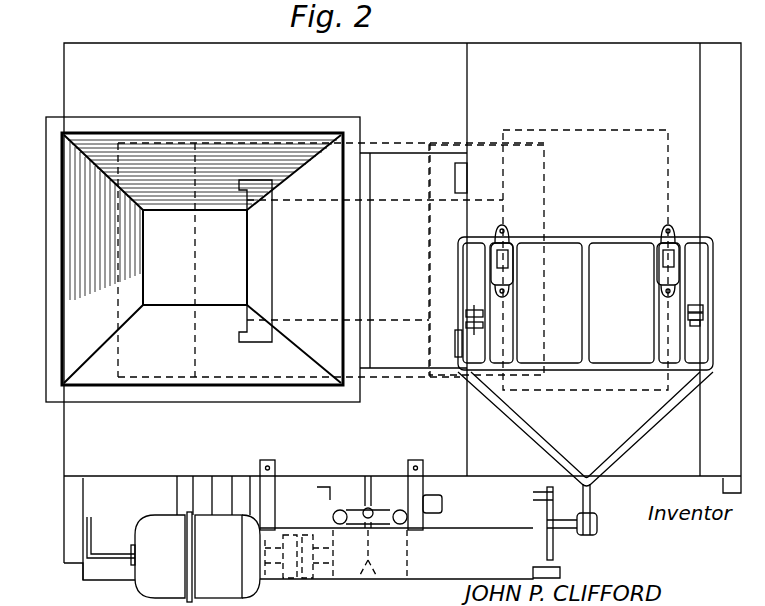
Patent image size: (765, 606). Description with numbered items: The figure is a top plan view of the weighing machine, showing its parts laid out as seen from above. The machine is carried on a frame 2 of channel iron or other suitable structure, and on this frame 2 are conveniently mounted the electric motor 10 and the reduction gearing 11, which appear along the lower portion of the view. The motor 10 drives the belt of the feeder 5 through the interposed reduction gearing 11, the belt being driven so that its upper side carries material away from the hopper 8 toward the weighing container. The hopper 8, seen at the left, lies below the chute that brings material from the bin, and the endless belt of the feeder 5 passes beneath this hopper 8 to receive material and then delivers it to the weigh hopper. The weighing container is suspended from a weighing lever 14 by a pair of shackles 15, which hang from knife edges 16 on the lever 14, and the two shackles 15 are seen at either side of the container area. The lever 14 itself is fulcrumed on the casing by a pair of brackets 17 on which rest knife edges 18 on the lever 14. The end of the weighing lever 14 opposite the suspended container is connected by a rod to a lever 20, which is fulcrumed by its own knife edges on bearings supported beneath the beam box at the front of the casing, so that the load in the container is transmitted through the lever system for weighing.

The frame 2 is at (70, 500).
The feeder 5 is at (202, 259).
The hopper 8 is at (100, 292).
The electric motor 10 is at (197, 557).
The reduction gearing 11 is at (362, 502).
The weighing lever 14 is at (647, 432).
The shackles 15 is at (497, 240).
The knife edges 16 is at (508, 248).
The brackets 17 is at (472, 308).
The knife edges 18 is at (484, 305).
The lever 20 is at (562, 521).